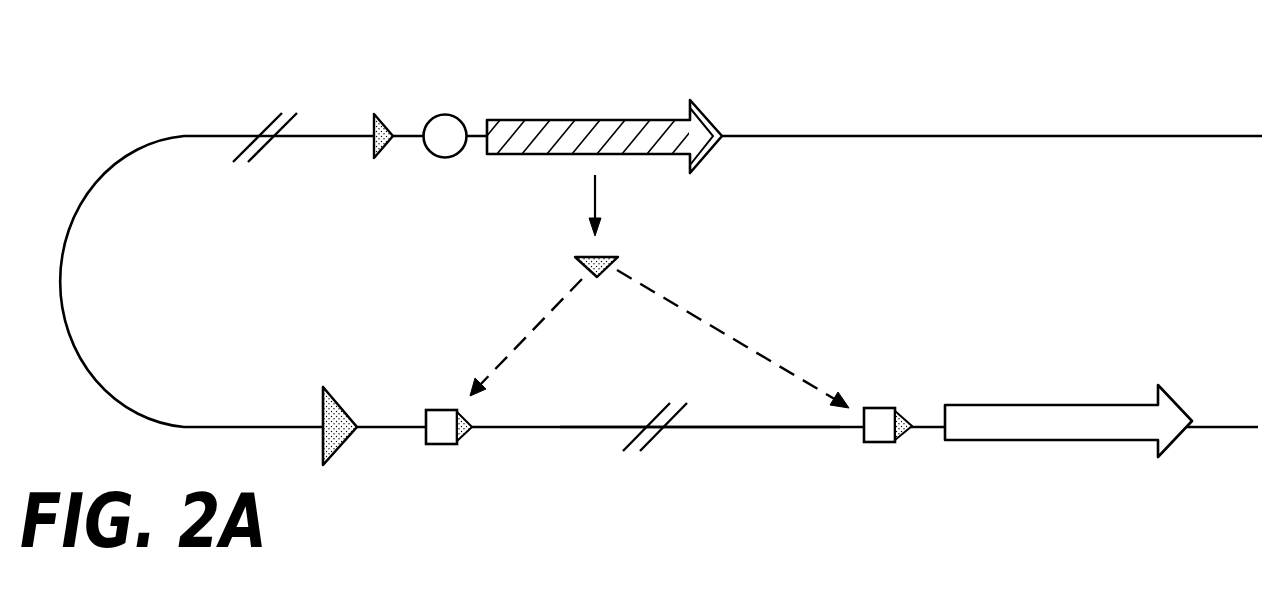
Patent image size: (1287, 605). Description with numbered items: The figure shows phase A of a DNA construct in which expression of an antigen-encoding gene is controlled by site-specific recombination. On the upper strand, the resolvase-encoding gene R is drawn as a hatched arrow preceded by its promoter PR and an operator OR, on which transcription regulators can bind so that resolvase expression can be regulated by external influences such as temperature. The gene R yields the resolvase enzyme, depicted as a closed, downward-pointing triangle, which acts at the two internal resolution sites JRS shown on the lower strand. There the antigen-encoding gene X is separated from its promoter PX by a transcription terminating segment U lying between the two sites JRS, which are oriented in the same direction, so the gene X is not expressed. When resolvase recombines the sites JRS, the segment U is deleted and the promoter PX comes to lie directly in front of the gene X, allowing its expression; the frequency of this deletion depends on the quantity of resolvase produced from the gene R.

The promoter of the resolvase-encoding gene PR is at (379, 95).
The operator OR is at (446, 95).
The resolvase-encoding gene R is at (598, 105).
The promoter of the antigen-encoding gene PX is at (342, 460).
The internal resolution site JRS is at (659, 464).
The transcription terminating segment U is at (700, 474).
The antigen-encoding gene X is at (1068, 453).